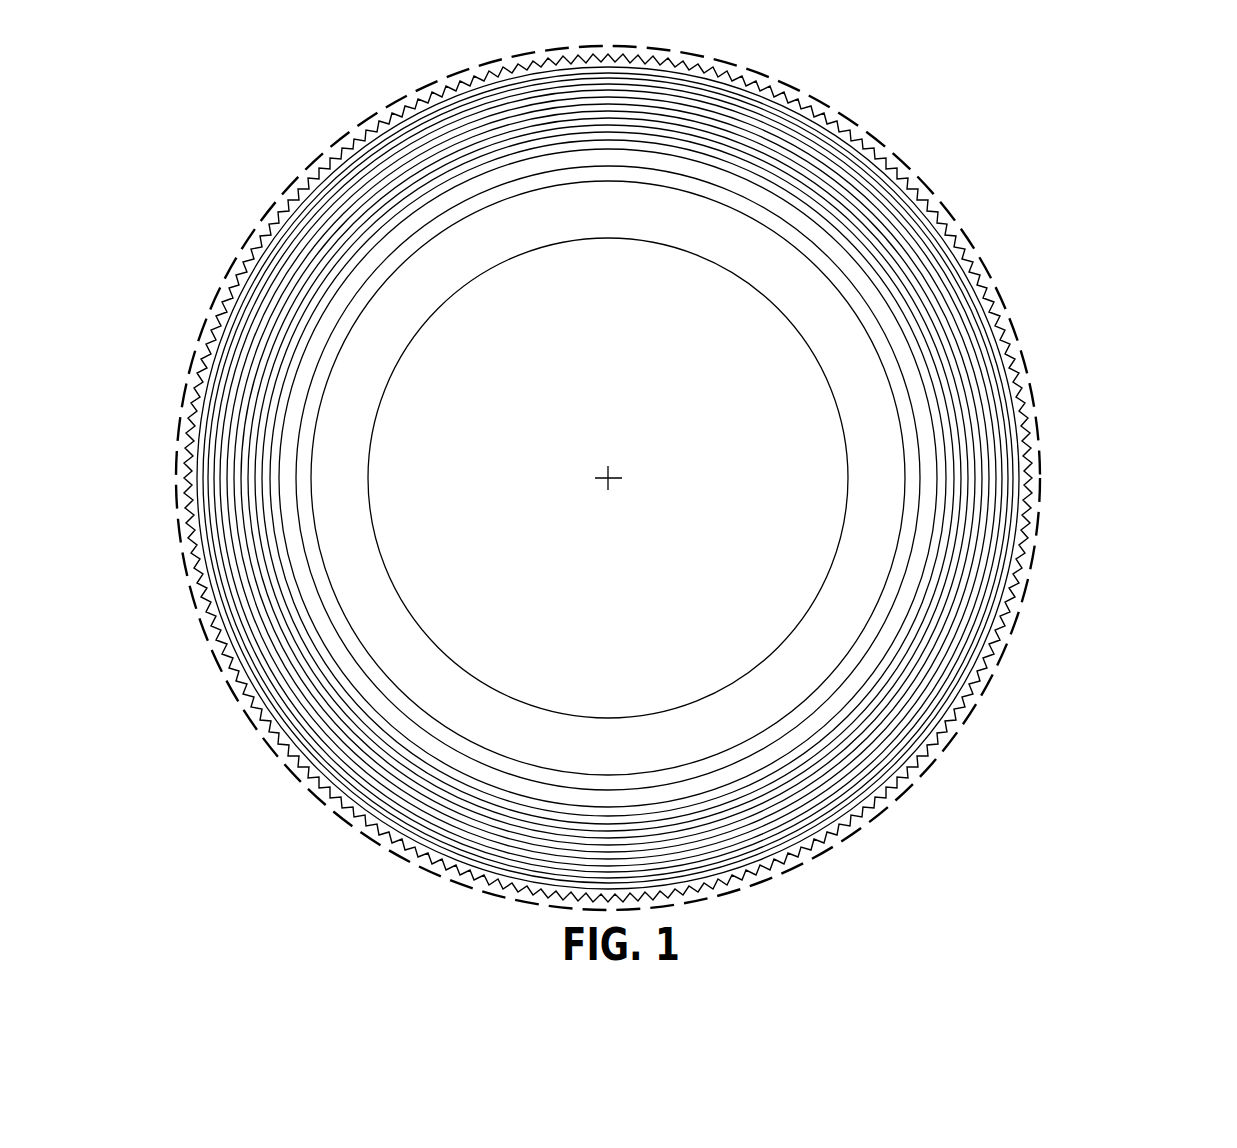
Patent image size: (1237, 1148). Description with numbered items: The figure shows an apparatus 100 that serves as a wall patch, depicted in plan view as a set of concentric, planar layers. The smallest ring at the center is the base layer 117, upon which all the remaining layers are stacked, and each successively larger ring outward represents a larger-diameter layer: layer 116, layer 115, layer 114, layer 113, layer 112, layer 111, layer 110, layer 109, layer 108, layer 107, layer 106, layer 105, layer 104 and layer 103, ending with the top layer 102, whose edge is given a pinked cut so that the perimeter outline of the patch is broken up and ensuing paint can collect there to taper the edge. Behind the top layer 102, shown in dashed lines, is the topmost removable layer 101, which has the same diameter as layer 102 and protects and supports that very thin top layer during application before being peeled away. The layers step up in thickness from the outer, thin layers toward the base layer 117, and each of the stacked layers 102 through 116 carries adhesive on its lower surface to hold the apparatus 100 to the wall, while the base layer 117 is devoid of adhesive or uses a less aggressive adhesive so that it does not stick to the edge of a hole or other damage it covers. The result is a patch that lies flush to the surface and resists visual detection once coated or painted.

The apparatus 100 is at (1148, 88).
The removable layer 101 is at (922, 192).
The top layer 102 is at (933, 210).
The layer 103 is at (943, 230).
The layer 104 is at (952, 250).
The layer 105 is at (960, 272).
The layer 106 is at (966, 295).
The layer 107 is at (970, 318).
The layer 108 is at (973, 342).
The layer 109 is at (974, 368).
The layer 110 is at (972, 398).
The layer 111 is at (968, 425).
The layer 112 is at (964, 448).
The layer 113 is at (957, 473).
The layer 114 is at (937, 497).
The layer 115 is at (920, 518).
The layer 116 is at (907, 535).
The base layer 117 is at (845, 550).